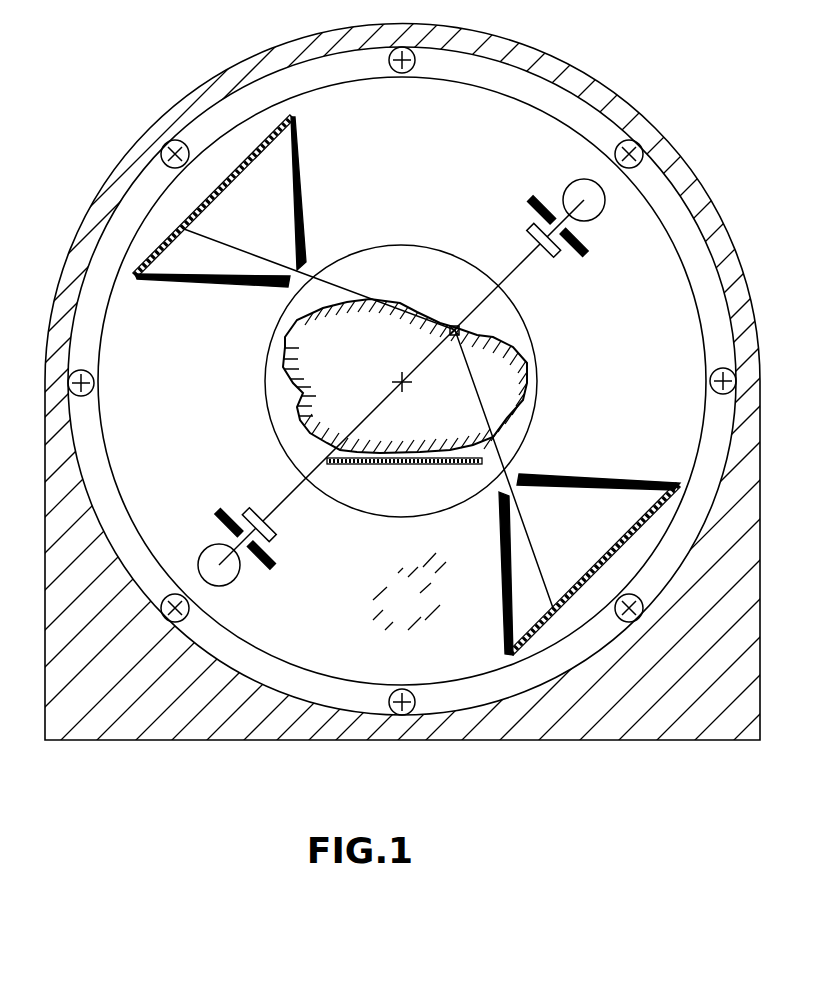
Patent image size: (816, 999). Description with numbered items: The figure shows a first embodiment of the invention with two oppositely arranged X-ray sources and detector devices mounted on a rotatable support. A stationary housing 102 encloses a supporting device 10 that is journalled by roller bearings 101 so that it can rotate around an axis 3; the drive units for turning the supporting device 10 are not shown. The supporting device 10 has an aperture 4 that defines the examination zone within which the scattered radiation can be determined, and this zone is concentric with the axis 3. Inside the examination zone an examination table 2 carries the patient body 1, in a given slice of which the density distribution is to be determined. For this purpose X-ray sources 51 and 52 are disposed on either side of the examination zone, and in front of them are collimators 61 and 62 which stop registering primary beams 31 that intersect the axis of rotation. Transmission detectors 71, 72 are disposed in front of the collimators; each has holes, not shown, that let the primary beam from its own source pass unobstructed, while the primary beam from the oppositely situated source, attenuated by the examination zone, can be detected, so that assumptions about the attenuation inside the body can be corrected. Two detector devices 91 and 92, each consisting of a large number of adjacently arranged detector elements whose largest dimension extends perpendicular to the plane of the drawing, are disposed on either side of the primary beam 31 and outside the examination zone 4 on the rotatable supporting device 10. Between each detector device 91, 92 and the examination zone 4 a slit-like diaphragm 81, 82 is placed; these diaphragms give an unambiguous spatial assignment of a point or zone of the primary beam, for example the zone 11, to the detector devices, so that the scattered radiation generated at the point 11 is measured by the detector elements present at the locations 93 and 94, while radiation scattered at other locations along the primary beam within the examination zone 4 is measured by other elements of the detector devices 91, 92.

The patient body 1 is at (300, 396).
The examination table 2 is at (466, 463).
The axis 3 is at (408, 383).
The aperture 4 is at (428, 247).
The supporting device 10 is at (409, 591).
The zone of the primary beam 11 is at (453, 325).
The primary beam 31 is at (524, 267).
The X-ray source 51 is at (234, 578).
The X-ray source 52 is at (606, 208).
The collimator 61 is at (273, 563).
The collimator 62 is at (587, 254).
The transmission detector 71 is at (276, 531).
The transmission detector 72 is at (557, 256).
The slit-like diaphragm 81 is at (541, 473).
The slit-like diaphragm 82 is at (308, 236).
The detector device 91 is at (613, 543).
The detector device 92 is at (213, 202).
The detector element location 93 is at (555, 605).
The detector element location 94 is at (181, 236).
The roller bearings 101 is at (173, 593).
The stationary housing 102 is at (408, 499).